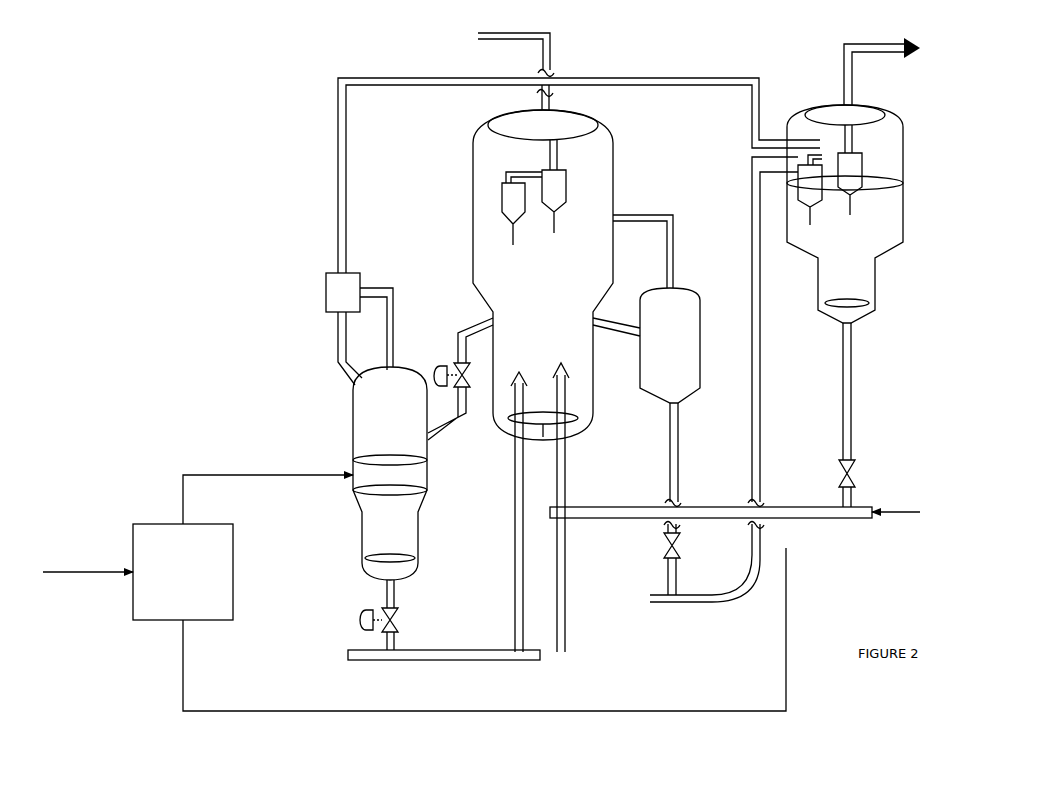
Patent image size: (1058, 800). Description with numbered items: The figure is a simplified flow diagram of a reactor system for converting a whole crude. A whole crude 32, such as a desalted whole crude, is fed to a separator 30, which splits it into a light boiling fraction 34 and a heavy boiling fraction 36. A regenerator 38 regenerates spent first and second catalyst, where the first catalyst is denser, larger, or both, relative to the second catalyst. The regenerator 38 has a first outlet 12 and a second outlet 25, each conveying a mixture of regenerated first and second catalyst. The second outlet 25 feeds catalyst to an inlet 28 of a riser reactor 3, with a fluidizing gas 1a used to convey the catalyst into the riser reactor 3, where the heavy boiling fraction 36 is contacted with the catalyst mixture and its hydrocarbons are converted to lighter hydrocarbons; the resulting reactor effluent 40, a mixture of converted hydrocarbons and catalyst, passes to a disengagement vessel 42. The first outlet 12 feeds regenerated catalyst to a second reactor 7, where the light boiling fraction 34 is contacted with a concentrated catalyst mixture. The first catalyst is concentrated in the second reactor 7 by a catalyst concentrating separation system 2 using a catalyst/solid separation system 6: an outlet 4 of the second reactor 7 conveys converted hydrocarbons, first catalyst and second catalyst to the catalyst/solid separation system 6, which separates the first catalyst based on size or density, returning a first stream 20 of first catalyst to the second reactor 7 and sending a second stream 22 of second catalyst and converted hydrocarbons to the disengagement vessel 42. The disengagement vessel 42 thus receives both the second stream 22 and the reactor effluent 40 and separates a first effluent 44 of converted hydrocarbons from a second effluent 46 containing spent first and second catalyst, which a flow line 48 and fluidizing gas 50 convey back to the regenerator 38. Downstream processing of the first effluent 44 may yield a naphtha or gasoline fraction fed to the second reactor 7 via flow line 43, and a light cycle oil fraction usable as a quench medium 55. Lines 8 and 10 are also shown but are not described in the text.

The fluidizing gas 1a is at (650, 598).
The catalyst concentrating separation system 2 is at (296, 295).
The riser reactor 3 is at (773, 332).
The outlet 4 is at (376, 329).
The catalyst/solid separation system 6 is at (343, 292).
The second reactor 7 is at (353, 425).
The catalyst withdrawal line 8 is at (418, 552).
The inlet line 10 is at (428, 455).
The first outlet 12 is at (460, 379).
The first stream 20 is at (341, 348).
The second stream 22 is at (570, 175).
The second outlet 25 is at (616, 323).
The inlet 28 is at (680, 559).
The separator 30 is at (183, 572).
The whole crude 32 is at (88, 564).
The light boiling fraction 34 is at (268, 491).
The heavy boiling fraction 36 is at (782, 548).
The regenerator 38 is at (613, 250).
The reactor effluent 40 is at (774, 163).
The disengagement vessel 42 is at (905, 207).
The flow line 43 is at (428, 473).
The first effluent 44 is at (882, 66).
The second effluent 46 is at (858, 415).
The flow line 48 is at (711, 505).
The fluidizing gas 50 is at (896, 504).
The quench medium 55 is at (338, 204).